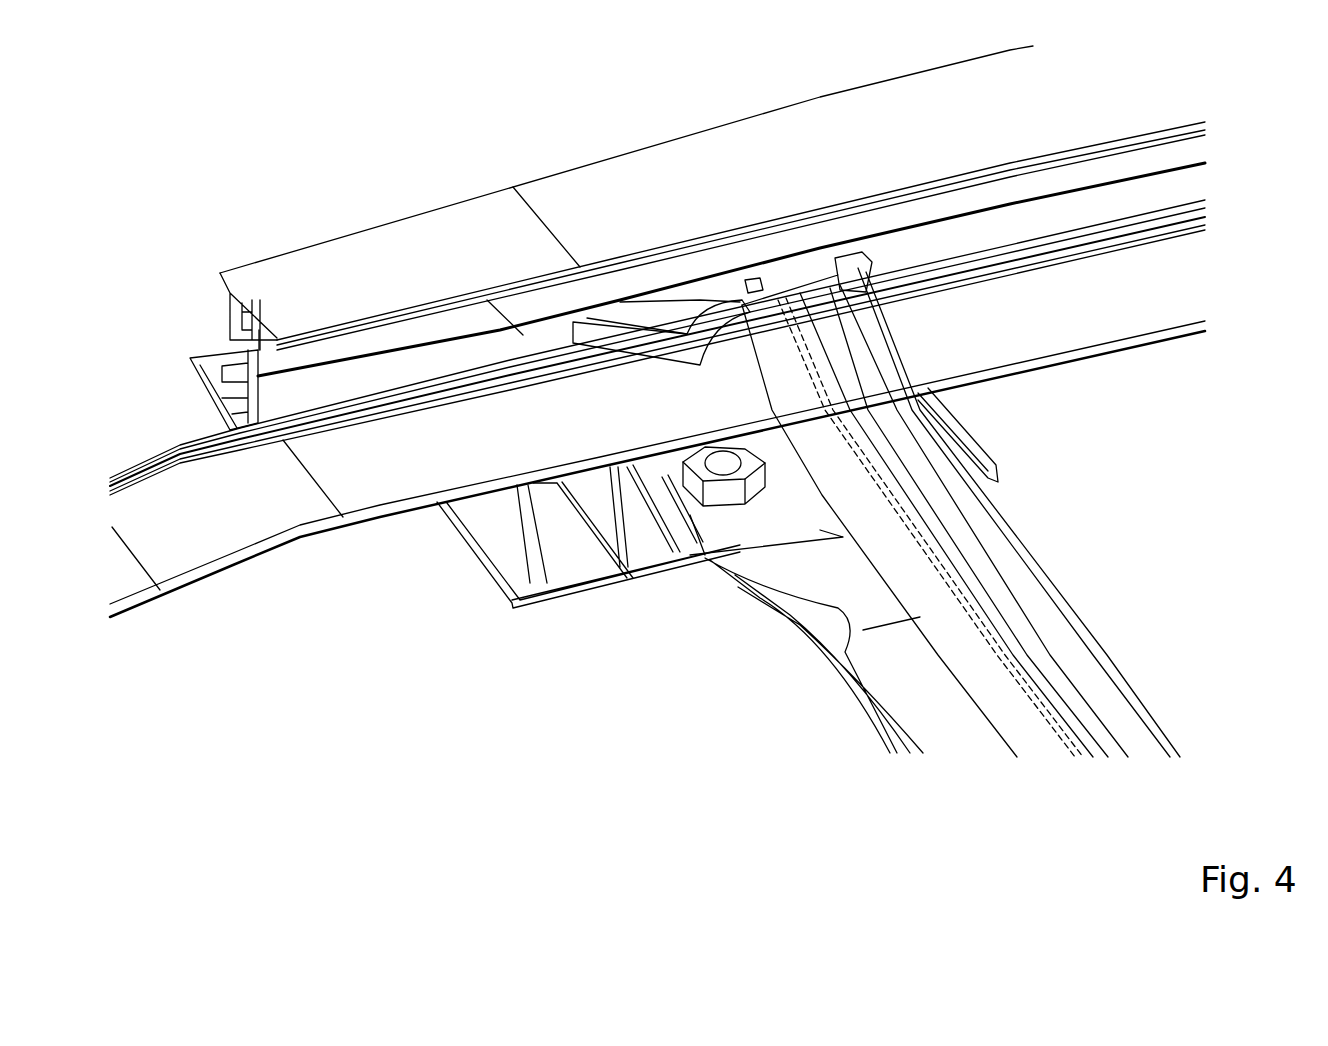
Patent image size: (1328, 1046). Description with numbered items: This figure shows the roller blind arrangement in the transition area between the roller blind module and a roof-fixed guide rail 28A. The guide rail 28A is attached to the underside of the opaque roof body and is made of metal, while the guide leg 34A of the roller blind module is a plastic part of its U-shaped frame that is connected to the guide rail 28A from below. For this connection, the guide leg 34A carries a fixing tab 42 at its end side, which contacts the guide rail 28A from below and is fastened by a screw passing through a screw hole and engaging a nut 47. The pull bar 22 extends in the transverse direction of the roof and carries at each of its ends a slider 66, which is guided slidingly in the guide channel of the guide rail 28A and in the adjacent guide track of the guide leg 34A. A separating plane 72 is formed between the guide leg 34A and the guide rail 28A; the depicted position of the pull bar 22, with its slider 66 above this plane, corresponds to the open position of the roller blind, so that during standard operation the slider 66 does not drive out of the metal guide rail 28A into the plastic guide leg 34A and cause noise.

The pull bar 22 is at (1085, 672).
The guide rail 28A is at (668, 414).
The guide leg 34A is at (393, 468).
The fixing tab 42 is at (668, 575).
The nut 47 is at (722, 492).
The slider 66 is at (668, 318).
The separating plane 72 is at (565, 352).